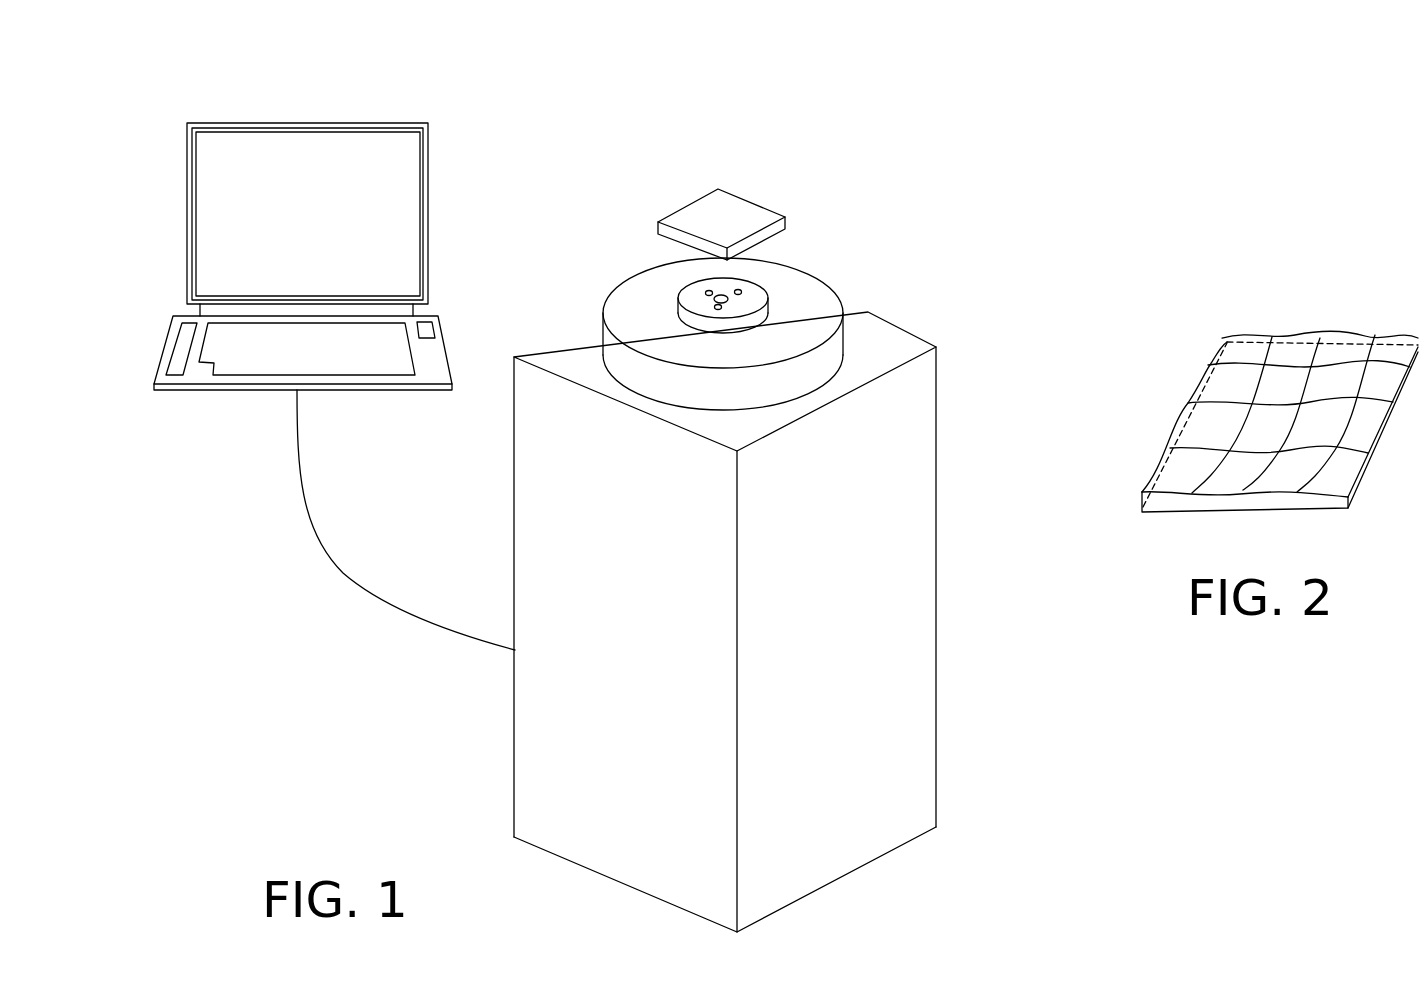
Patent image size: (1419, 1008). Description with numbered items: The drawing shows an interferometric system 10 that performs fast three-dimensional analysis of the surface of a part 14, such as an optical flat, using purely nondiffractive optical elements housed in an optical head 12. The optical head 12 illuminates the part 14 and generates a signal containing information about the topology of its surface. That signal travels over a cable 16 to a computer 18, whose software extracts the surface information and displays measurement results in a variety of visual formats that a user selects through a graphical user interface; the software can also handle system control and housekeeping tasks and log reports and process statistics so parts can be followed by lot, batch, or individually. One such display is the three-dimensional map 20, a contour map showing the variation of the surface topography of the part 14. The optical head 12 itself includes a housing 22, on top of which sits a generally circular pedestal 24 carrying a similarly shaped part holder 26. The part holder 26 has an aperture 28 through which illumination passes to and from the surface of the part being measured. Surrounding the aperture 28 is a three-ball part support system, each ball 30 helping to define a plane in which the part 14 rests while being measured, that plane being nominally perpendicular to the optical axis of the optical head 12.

In FIG. 1, the interferometric system 10 is at (995, 160).
In FIG. 1, the optical head 12 is at (872, 312).
In FIG. 1, the part 14 is at (735, 205).
In FIG. 1, the cable 16 is at (343, 575).
In FIG. 1, the computer 18 is at (436, 212).
In FIG. 2, the three-dimensional map 20 is at (1290, 335).
In FIG. 1, the housing 22 is at (950, 643).
In FIG. 1, the pedestal 24 is at (818, 352).
In FIG. 1, the part holder 26 is at (670, 323).
In FIG. 1, the aperture 28 is at (714, 295).
In FIG. 1, the ball 30 is at (705, 292).